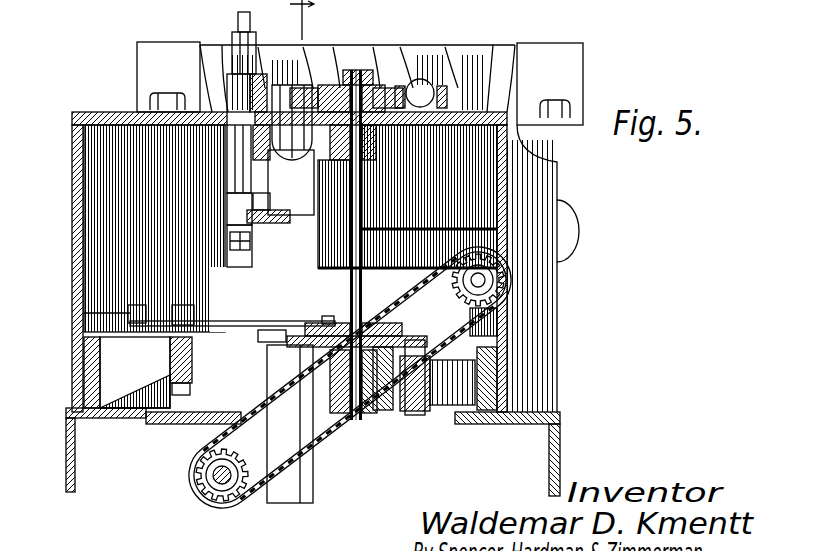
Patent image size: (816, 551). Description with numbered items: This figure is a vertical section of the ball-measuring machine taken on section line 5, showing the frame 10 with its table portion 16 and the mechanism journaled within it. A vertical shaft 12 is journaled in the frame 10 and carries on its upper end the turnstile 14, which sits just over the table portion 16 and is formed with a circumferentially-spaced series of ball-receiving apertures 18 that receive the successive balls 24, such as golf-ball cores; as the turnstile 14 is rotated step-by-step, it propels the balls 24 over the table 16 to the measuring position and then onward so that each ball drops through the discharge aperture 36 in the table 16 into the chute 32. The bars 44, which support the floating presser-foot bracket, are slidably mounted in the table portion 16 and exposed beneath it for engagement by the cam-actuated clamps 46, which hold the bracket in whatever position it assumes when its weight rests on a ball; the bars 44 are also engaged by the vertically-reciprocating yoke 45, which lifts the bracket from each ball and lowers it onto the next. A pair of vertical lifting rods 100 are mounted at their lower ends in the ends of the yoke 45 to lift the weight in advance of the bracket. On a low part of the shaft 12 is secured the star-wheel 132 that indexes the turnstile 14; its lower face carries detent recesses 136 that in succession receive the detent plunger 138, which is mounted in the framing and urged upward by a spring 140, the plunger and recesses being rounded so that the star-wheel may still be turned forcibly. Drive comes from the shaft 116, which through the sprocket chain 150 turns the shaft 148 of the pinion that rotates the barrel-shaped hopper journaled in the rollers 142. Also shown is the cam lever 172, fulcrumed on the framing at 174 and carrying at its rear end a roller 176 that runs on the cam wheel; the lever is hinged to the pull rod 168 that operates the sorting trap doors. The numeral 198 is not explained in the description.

The frame 10 is at (548, 322).
The vertical shaft 12 is at (360, 268).
The turnstile 14 is at (458, 100).
The table portion 16 is at (470, 110).
The ball-receiving apertures 18 is at (318, 100).
The balls 24 is at (420, 90).
The chute 32 is at (291, 182).
The discharge aperture 36 is at (292, 115).
The bars 44 is at (256, 32).
The yoke 45 is at (280, 224).
The clamps 46 is at (198, 100).
The lifting rods 100 is at (238, 32).
The shaft 116 is at (223, 487).
The star-wheel 132 is at (258, 342).
The detent recesses 136 is at (298, 377).
The detent plunger 138 is at (382, 417).
The spring 140 is at (453, 407).
The rollers 142 is at (632, 0).
The shaft 148 is at (480, 282).
The sprocket chain 150 is at (333, 437).
The pull rod 168 is at (327, 312).
The cam lever 172 is at (227, 320).
The fulcrum 174 is at (188, 308).
The roller 176 is at (127, 308).
The arm 198 is at (736, 7).
The section line 5 is at (282, 8).